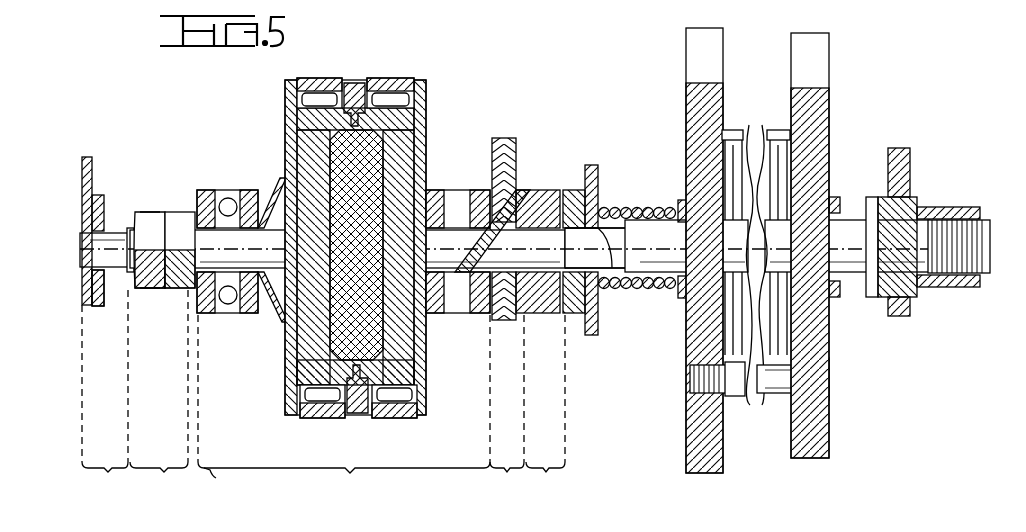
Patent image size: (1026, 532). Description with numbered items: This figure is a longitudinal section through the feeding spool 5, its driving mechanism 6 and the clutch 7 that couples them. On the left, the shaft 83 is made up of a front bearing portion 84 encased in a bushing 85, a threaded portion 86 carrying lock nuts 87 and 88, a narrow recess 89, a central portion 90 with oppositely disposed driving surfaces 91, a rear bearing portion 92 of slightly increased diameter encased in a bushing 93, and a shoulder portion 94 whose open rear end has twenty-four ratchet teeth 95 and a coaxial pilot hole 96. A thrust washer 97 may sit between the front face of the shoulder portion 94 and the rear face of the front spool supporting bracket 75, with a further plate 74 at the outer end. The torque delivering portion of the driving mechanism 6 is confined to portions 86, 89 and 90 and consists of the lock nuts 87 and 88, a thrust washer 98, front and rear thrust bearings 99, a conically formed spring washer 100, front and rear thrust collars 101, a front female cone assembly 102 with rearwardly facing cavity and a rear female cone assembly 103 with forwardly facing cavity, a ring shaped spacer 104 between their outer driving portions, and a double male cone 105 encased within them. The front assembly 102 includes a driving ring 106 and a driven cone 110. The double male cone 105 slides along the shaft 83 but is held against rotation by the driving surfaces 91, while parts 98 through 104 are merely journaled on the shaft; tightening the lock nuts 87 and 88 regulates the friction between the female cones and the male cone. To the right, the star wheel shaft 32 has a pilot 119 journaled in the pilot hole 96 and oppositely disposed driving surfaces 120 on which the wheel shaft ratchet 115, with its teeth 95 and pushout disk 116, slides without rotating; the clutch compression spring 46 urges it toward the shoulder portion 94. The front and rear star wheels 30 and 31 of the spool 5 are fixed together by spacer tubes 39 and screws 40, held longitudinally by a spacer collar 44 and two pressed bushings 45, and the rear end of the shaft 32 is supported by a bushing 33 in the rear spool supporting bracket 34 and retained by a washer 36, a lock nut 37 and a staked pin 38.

The feeding spool 5 is at (772, 440).
The feeding spool driving mechanism 6 is at (266, 172).
The clutch 7 is at (660, 152).
The front star wheel 30 is at (688, 440).
The rear star wheel 31 is at (830, 432).
The star wheel shaft 32 is at (748, 134).
The bushing 33 is at (874, 298).
The rear spool supporting bracket 34 is at (910, 162).
The washer 36 is at (918, 200).
The lock nut 37 is at (980, 275).
The staked pin 38 is at (945, 288).
The spacer tubes 39 is at (772, 396).
The screws 40 is at (740, 396).
The spacer collar 44 is at (836, 198).
The bushings 45 is at (683, 200).
The compression spring 46 is at (648, 194).
The end plate 74 is at (92, 168).
The front spool supporting bracket 75 is at (510, 140).
The shaft 83 is at (78, 248).
The front bearing portion 84 is at (105, 478).
The bushing 85 is at (112, 292).
The threaded portion 86 is at (159, 478).
The lock nut 87 is at (145, 212).
The lock nut 88 is at (183, 212).
The narrow recess 89 is at (215, 478).
The central portion 90 is at (347, 478).
The driving surfaces 91 is at (290, 325).
The rear bearing portion 92 is at (507, 478).
The bushing 93 is at (482, 192).
The shoulder portion 94 is at (545, 478).
The ratchet teeth 95 is at (556, 314).
The pilot hole 96 is at (584, 196).
The thrust washer 97 is at (536, 192).
The thrust washer 98 is at (244, 192).
The thrust bearing 99 is at (455, 198).
The spring washer 100 is at (272, 312).
The thrust collars 101 is at (418, 401).
The front female cone assembly 102 is at (336, 422).
The rear female cone assembly 103 is at (400, 422).
The ring shaped spacer 104 is at (357, 415).
The double male cone 105 is at (385, 340).
The driving ring 106 is at (328, 64).
The driven cone 110 is at (300, 374).
The wheel shaft ratchet 115 is at (602, 312).
The pushout disk 116 is at (596, 168).
The pilot 119 is at (528, 315).
The driving surfaces 120 is at (614, 248).